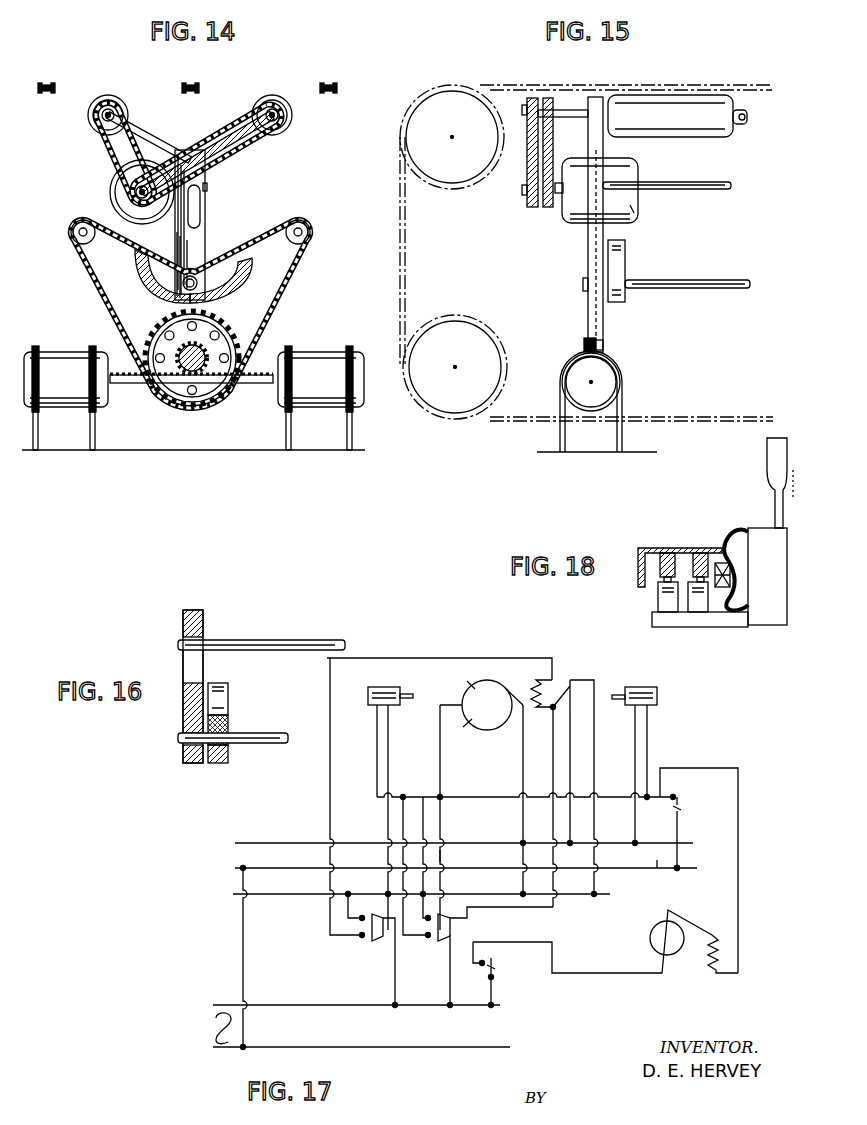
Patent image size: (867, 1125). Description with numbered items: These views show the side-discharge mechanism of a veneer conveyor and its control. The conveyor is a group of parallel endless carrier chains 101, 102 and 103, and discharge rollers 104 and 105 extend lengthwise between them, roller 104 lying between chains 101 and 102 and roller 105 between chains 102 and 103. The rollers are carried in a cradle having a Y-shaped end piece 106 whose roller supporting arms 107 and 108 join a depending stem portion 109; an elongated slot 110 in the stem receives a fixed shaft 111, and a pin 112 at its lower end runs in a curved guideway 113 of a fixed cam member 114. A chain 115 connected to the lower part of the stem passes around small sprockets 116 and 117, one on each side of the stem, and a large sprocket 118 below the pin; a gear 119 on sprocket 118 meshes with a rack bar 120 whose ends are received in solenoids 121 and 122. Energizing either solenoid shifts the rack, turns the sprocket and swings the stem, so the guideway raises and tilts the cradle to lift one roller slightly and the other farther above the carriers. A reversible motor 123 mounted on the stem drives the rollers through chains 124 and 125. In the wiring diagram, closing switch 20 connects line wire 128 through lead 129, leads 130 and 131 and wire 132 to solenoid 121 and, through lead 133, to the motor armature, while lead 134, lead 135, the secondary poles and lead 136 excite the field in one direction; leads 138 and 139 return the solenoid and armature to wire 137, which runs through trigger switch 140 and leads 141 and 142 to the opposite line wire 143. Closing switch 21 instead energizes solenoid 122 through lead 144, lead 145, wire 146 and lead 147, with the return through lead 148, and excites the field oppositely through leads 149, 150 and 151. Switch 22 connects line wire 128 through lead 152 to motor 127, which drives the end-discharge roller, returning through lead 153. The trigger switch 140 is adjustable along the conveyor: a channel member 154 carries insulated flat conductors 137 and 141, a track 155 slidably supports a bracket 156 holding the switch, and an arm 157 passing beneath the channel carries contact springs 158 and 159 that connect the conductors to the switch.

In FIG. 17, the switch 20 is at (377, 937).
In FIG. 17, the switch 21 is at (443, 935).
In FIG. 17, the switch 22 is at (502, 977).
In FIG. 14, the chain 101 is at (48, 83).
In FIG. 14, the chain 102 is at (192, 83).
In FIG. 14, the chain 103 is at (337, 73).
In FIG. 15, the chain 103 is at (570, 85).
In FIG. 14, the roller 104 is at (88, 115).
In FIG. 14, the roller 105 is at (288, 122).
In FIG. 14, the Y-shaped end piece 106 is at (205, 210).
In FIG. 15, the Y-shaped end piece 106 is at (590, 210).
In FIG. 16, the Y-shaped end piece 106 is at (185, 728).
In FIG. 14, the roller supporting arm 107 is at (168, 137).
In FIG. 14, the roller supporting arm 108 is at (240, 115).
In FIG. 15, the roller supporting arm 108 is at (604, 138).
In FIG. 14, the depending stem portion 109 is at (177, 235).
In FIG. 14, the elongated slot 110 is at (201, 221).
In FIG. 15, the elongated slot 110 is at (634, 213).
In FIG. 16, the elongated slot 110 is at (195, 685).
In FIG. 14, the fixed shaft 111 is at (206, 187).
In FIG. 15, the fixed shaft 111 is at (713, 188).
In FIG. 16, the fixed shaft 111 is at (253, 640).
In FIG. 14, the pin 112 is at (187, 287).
In FIG. 15, the pin 112 is at (710, 290).
In FIG. 16, the pin 112 is at (278, 743).
In FIG. 14, the curved guideway 113 is at (222, 270).
In FIG. 16, the curved guideway 113 is at (228, 728).
In FIG. 14, the fixed cam member 114 is at (152, 293).
In FIG. 15, the fixed cam member 114 is at (626, 255).
In FIG. 16, the fixed cam member 114 is at (228, 690).
In FIG. 14, the chain 115 is at (283, 302).
In FIG. 15, the chain 115 is at (590, 267).
In FIG. 14, the sprocket 116 is at (71, 232).
In FIG. 14, the sprocket 117 is at (311, 204).
In FIG. 14, the sprocket 118 is at (192, 404).
In FIG. 15, the sprocket 118 is at (603, 344).
In FIG. 14, the gear 119 is at (207, 337).
In FIG. 15, the gear 119 is at (588, 338).
In FIG. 14, the rack bar 120 is at (122, 386).
In FIG. 14, the solenoid 121 is at (78, 350).
In FIG. 17, the solenoid 121 is at (395, 687).
In FIG. 14, the solenoid 122 is at (333, 351).
In FIG. 15, the solenoid 122 is at (614, 378).
In FIG. 17, the solenoid 122 is at (640, 687).
In FIG. 14, the reversible motor 123 is at (114, 187).
In FIG. 15, the reversible motor 123 is at (640, 165).
In FIG. 17, the reversible motor 123 is at (477, 688).
In FIG. 14, the chain 124 is at (107, 150).
In FIG. 14, the chain 125 is at (246, 142).
In FIG. 15, the chain 125 is at (527, 172).
In FIG. 17, the motor 127 is at (650, 938).
In FIG. 17, the line wire 128 is at (317, 1005).
In FIG. 17, the lead 129 is at (395, 977).
In FIG. 17, the lead 130 is at (353, 900).
In FIG. 17, the lead 131 is at (388, 813).
In FIG. 17, the wire 132 is at (292, 893).
In FIG. 17, the lead 133 is at (523, 753).
In FIG. 17, the lead 134 is at (594, 747).
In FIG. 17, the lead 135 is at (463, 658).
In FIG. 17, the lead 136 is at (403, 812).
In FIG. 18, the wire 137 is at (665, 553).
In FIG. 17, the wire 137 is at (490, 796).
In FIG. 17, the lead 138 is at (377, 757).
In FIG. 17, the lead 139 is at (440, 738).
In FIG. 18, the trigger switch 140 is at (767, 528).
In FIG. 17, the trigger switch 140 is at (680, 803).
In FIG. 18, the lead 141 is at (700, 553).
In FIG. 17, the lead 141 is at (657, 868).
In FIG. 17, the lead 142 is at (245, 940).
In FIG. 17, the line wire 143 is at (295, 1045).
In FIG. 17, the lead 144 is at (450, 977).
In FIG. 17, the lead 145 is at (440, 833).
In FIG. 17, the wire 146 is at (500, 838).
In FIG. 17, the lead 147 is at (635, 823).
In FIG. 17, the lead 148 is at (647, 740).
In FIG. 17, the lead 149 is at (570, 740).
In FIG. 17, the lead 150 is at (553, 823).
In FIG. 17, the lead 151 is at (446, 853).
In FIG. 17, the lead 152 is at (607, 973).
In FIG. 17, the lead 153 is at (738, 890).
In FIG. 18, the channel member 154 is at (639, 580).
In FIG. 18, the track 155 is at (727, 540).
In FIG. 18, the bracket 156 is at (735, 612).
In FIG. 18, the arm 157 is at (656, 620).
In FIG. 18, the contact spring 158 is at (662, 595).
In FIG. 18, the contact spring 159 is at (703, 605).